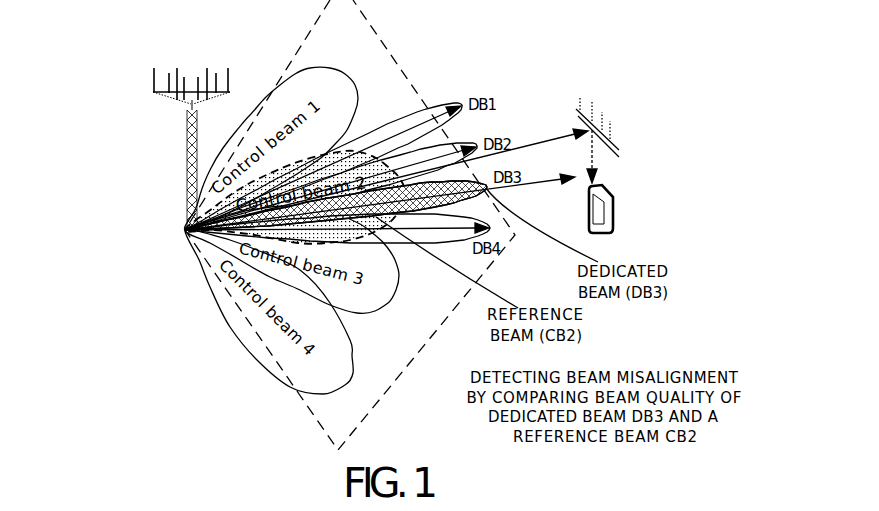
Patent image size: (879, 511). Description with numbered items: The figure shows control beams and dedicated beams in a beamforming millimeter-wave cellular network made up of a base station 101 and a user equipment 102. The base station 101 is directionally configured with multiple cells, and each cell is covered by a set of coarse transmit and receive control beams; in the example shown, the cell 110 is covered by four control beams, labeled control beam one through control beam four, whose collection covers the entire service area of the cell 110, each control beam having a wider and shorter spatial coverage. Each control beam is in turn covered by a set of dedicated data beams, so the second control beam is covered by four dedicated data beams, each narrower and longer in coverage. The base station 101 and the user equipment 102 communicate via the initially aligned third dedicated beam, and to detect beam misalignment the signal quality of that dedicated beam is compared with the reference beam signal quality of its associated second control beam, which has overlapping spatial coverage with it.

The base station 101 is at (189, 67).
The user equipment 102 is at (599, 106).
The cell 110 is at (408, 343).